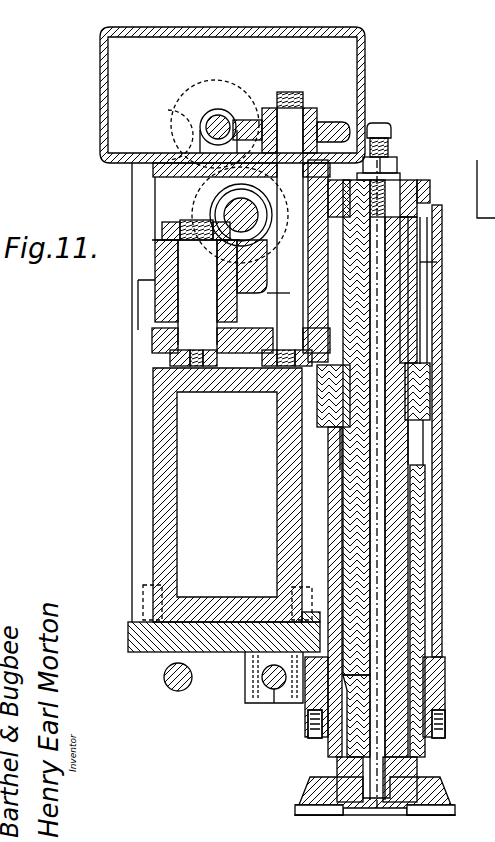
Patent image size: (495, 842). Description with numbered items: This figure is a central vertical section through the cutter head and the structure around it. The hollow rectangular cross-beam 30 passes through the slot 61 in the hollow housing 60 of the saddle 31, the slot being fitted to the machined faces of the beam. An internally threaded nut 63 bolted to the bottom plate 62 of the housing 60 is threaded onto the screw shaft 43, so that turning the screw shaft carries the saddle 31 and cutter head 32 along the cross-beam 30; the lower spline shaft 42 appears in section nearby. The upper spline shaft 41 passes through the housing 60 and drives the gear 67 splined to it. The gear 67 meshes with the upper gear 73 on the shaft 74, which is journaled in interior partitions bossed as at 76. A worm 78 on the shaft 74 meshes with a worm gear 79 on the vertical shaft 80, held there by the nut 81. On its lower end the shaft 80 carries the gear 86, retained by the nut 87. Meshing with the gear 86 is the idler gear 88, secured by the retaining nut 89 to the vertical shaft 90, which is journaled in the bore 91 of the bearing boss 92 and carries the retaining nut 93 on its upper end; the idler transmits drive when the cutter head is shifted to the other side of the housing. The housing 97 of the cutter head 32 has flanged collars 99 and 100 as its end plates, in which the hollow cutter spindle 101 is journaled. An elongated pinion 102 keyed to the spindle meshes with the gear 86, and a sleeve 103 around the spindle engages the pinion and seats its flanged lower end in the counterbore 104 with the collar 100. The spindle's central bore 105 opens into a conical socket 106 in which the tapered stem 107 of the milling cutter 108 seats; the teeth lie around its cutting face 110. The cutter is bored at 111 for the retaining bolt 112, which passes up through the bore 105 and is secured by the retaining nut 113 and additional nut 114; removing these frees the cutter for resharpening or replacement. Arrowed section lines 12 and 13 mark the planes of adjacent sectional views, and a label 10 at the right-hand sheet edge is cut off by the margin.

The base 10 is at (447, 812).
The section line 12- 12 is at (238, 758).
The section line 13- 13 is at (477, 362).
The cross-beam 30 is at (204, 511).
The cutter head saddle 31 is at (99, 141).
The cutter head 32 is at (444, 435).
The upper spline shaft 41 is at (232, 206).
The lower spline shaft 42 is at (163, 675).
The screw shaft 43 is at (262, 672).
The housing 60 is at (130, 440).
The slot 61 is at (158, 463).
The bottom plate 62 is at (130, 640).
The internally threaded nut 63 is at (245, 688).
The gear 67 is at (240, 226).
The upper gear 73 is at (195, 88).
The shaft 74 is at (212, 128).
The boss 76 is at (212, 113).
The worm 78 is at (207, 120).
The worm gear 79 is at (343, 120).
The vertical shaft 80 is at (309, 261).
The nut 81 is at (306, 97).
The gear 86 is at (250, 366).
The retaining nut 87 is at (259, 396).
The idler gear 88 is at (152, 343).
The retaining nut 89 is at (175, 358).
The vertical shaft 90 is at (234, 292).
The bore 91 is at (160, 265).
The bearing boss 92 is at (157, 250).
The retaining nut 93 is at (170, 222).
The housing 97 is at (433, 530).
The flanged collar 99 is at (418, 195).
The flanged collar 100 is at (423, 738).
The hollow cutter spindle 101 is at (405, 180).
The elongated pinion 102 is at (437, 262).
The sleeve 103 is at (413, 557).
The counterbore 104 is at (430, 680).
The central bore 105 is at (387, 408).
The conical socket 106 is at (448, 705).
The tapered stem 107 is at (360, 743).
The milling cutter 108 is at (376, 794).
The cutting face 110 is at (315, 807).
The longitudinal bore 111 is at (338, 772).
The retaining bolt 112 is at (385, 312).
The retaining nut 113 is at (393, 157).
The additional nut 114 is at (385, 122).